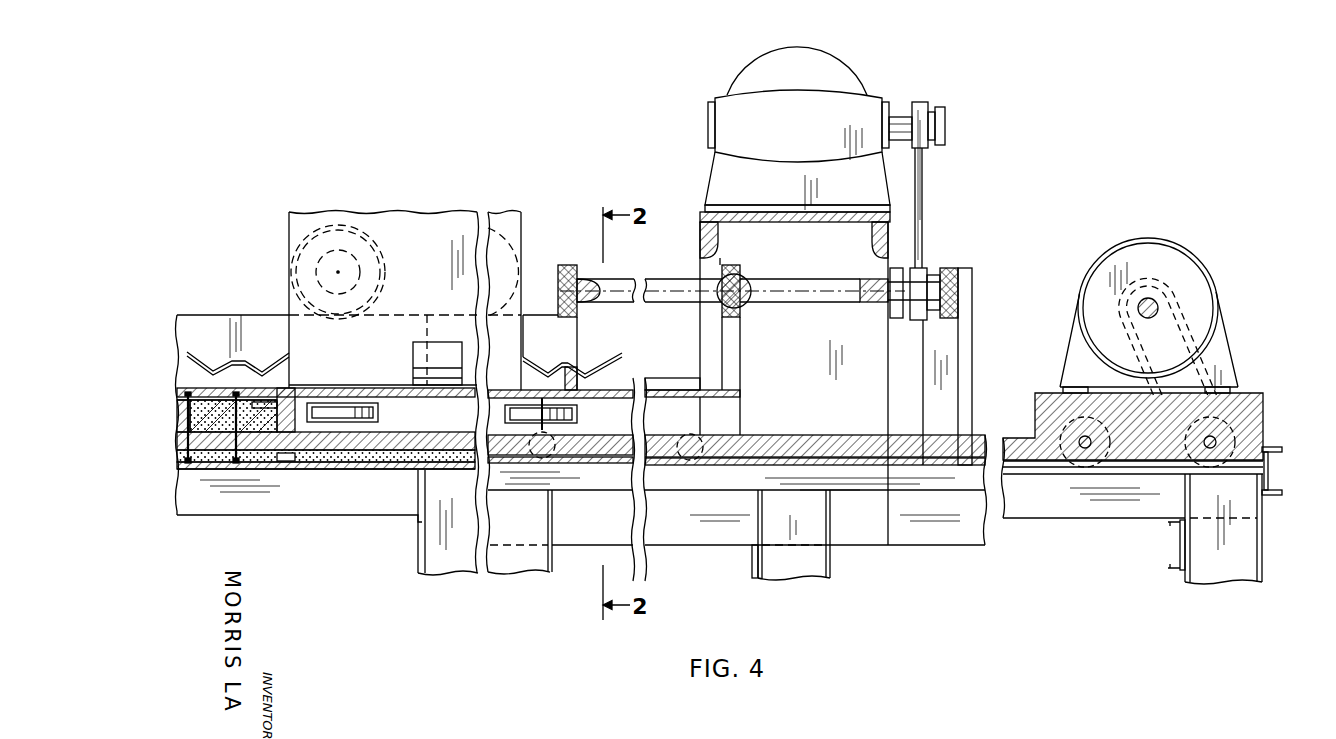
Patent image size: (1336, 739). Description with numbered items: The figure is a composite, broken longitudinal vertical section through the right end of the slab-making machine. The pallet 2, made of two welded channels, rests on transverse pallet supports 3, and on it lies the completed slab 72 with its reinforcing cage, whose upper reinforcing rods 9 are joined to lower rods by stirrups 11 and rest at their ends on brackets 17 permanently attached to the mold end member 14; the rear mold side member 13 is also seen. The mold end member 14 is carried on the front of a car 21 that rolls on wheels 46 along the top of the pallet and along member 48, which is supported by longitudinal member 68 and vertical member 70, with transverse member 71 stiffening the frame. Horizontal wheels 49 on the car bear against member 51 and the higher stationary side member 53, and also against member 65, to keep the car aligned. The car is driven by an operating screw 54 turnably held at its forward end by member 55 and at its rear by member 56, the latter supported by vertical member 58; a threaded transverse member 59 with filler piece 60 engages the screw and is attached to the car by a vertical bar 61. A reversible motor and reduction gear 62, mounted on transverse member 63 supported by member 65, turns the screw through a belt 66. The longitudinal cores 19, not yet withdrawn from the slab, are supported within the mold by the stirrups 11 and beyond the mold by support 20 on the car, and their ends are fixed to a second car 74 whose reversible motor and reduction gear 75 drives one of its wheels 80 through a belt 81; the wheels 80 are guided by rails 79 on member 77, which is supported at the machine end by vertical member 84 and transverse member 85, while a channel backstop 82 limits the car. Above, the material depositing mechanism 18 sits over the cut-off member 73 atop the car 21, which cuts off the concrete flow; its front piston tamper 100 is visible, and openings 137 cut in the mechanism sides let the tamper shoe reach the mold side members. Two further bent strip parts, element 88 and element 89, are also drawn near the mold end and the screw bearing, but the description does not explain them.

The pallet 2 is at (302, 470).
The pallet supports 3 is at (420, 557).
The upper longitudinally extending reinforcing rods 9 is at (177, 393).
The stirrups 11 is at (185, 420).
The mold side member 13 is at (262, 315).
The mold end member 14 is at (283, 462).
The brackets 17 is at (265, 403).
The material depositing mechanism 18 is at (289, 226).
The longitudinally extending cores 19 is at (947, 440).
The support 20 is at (360, 466).
The car 21 is at (741, 412).
The wheels 46 is at (685, 440).
The member 48 is at (890, 545).
The horizontally disposed wheels 49 is at (568, 424).
The vertically disposed longitudinally extending member 51 is at (657, 378).
The stationary side member 53 is at (532, 315).
The operating screw 54 is at (653, 279).
The member 55 is at (568, 265).
The member 56 is at (948, 268).
The member 58 is at (968, 282).
The member 59 is at (740, 277).
The filler piece 60 is at (722, 267).
The vertical bar 61 is at (741, 340).
The reversible motor and reduction gear 62 is at (850, 63).
The member 63 is at (700, 215).
The member 65 is at (712, 360).
The belt 66 is at (922, 188).
The member 68 is at (947, 535).
The vertical member 70 is at (803, 570).
The member 71 is at (757, 560).
The completed slab 72 is at (182, 390).
The cut-off member 73 is at (341, 430).
The car 74 is at (1263, 415).
The reversible motor and reduction gear 75 is at (1208, 277).
The member 77 is at (1032, 505).
The rails 79 is at (1060, 467).
The wheels 80 is at (1258, 425).
The belt 81 is at (1200, 362).
The channel backstop 82 is at (1270, 468).
The vertically disposed member 84 is at (1243, 562).
The member 85 is at (1180, 553).
The spring strip 88 is at (187, 352).
The spring strip 89 is at (579, 370).
The front piston tamper 100 is at (418, 378).
The openings 137 is at (452, 343).